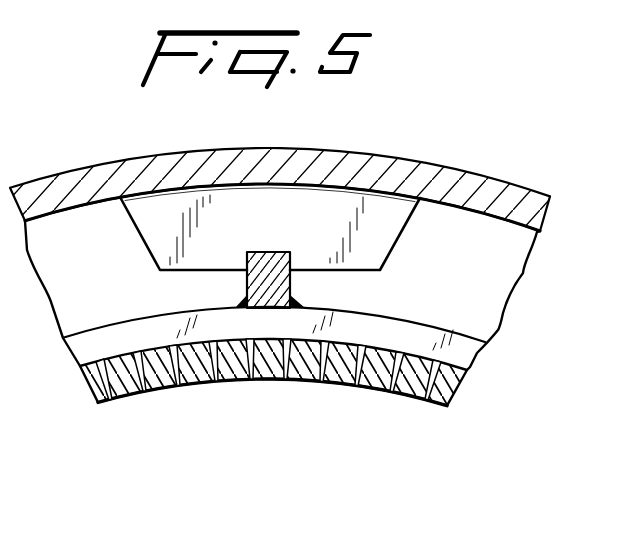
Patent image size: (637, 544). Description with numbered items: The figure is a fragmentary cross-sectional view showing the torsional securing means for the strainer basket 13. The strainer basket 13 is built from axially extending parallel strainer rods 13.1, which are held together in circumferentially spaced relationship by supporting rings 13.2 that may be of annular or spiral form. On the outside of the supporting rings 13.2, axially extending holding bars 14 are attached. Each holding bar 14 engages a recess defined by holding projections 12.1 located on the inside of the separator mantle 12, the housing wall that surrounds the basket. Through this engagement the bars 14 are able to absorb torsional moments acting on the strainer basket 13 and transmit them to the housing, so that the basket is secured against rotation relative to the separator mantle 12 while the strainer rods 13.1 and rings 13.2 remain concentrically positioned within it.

The separator mantle 12 is at (56, 192).
The holding projections 12.1 is at (327, 238).
The holding bars 14 is at (247, 283).
The supporting rings 13.2 is at (412, 321).
The strainer basket 13 is at (125, 403).
The strainer rods 13.1 is at (227, 385).